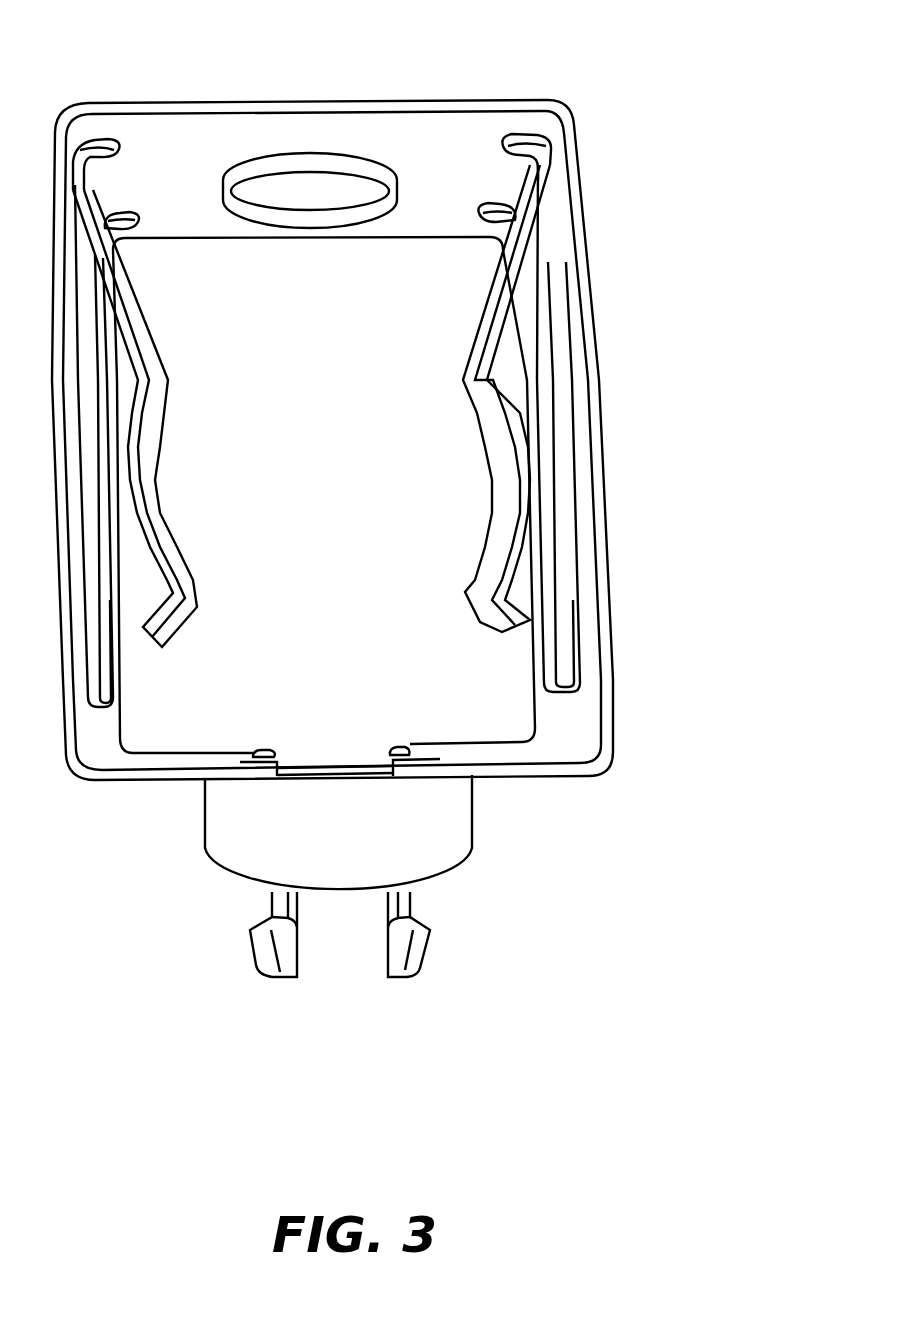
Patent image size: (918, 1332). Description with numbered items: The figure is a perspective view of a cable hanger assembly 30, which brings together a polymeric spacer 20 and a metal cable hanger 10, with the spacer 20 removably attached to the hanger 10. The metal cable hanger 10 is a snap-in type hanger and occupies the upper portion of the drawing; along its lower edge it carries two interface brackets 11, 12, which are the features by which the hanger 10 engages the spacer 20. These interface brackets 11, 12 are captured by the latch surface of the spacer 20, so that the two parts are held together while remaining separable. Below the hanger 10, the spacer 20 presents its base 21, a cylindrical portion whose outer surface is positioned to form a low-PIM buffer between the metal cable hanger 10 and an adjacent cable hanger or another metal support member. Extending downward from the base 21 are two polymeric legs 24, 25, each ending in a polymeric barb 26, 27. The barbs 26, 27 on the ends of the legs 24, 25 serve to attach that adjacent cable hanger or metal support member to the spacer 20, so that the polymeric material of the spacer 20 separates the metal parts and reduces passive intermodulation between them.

The cable hanger assembly 30 is at (690, 85).
The metal cable hanger 10 is at (657, 470).
The interface bracket 11 is at (294, 733).
The interface bracket 12 is at (370, 733).
The polymeric spacer 20 is at (375, 913).
The base 21 is at (227, 835).
The polymeric leg 24 is at (224, 972).
The polymeric leg 25 is at (471, 970).
The polymeric barb 26 is at (285, 960).
The polymeric barb 27 is at (415, 957).